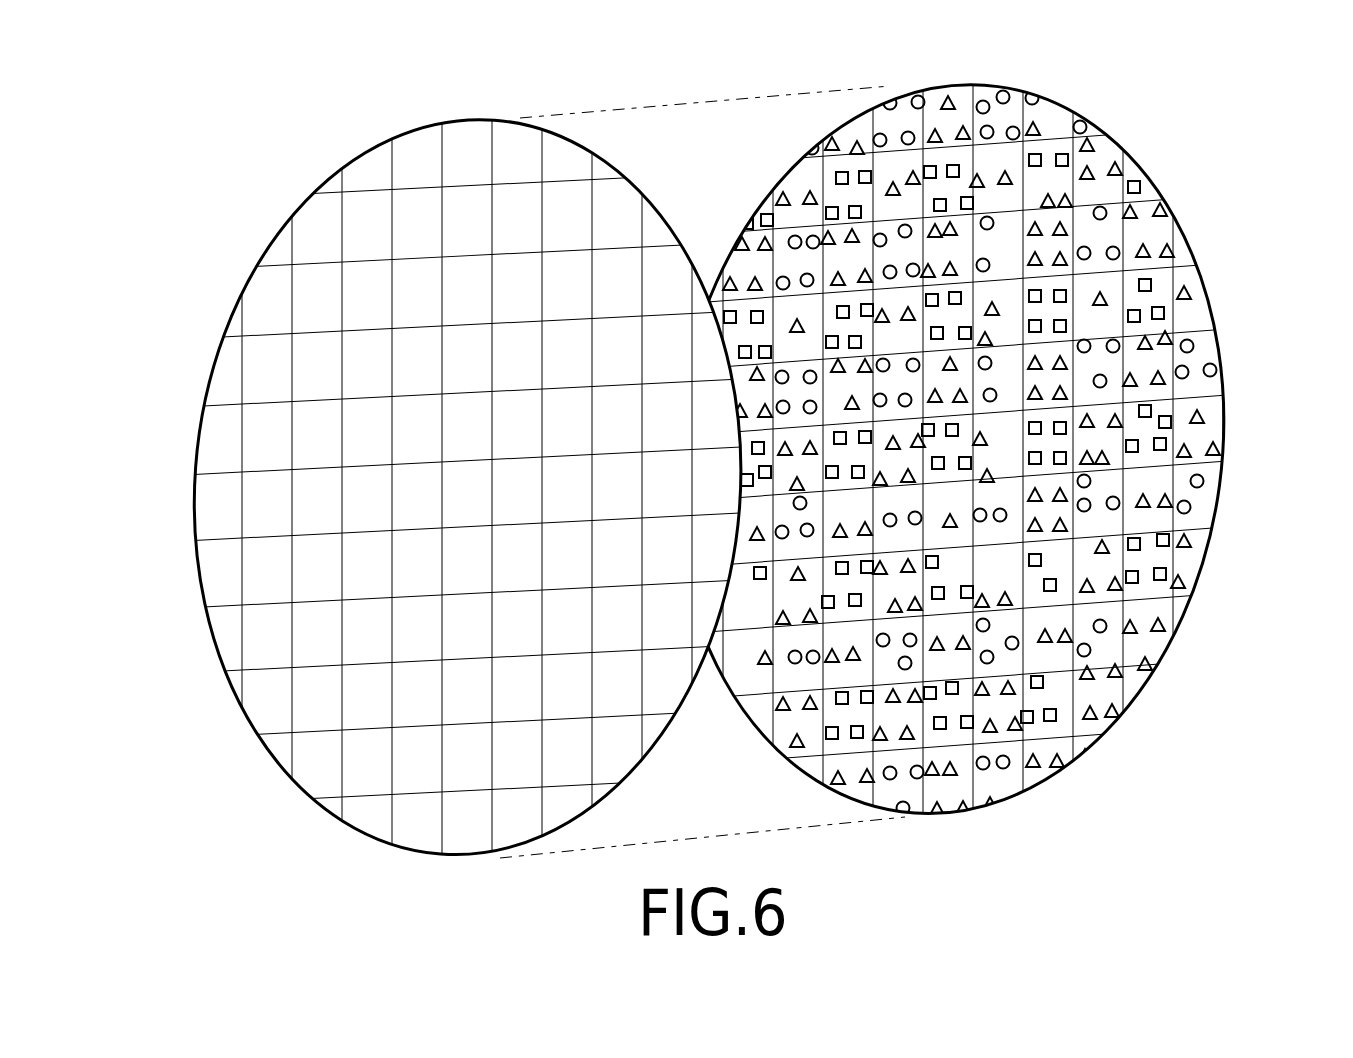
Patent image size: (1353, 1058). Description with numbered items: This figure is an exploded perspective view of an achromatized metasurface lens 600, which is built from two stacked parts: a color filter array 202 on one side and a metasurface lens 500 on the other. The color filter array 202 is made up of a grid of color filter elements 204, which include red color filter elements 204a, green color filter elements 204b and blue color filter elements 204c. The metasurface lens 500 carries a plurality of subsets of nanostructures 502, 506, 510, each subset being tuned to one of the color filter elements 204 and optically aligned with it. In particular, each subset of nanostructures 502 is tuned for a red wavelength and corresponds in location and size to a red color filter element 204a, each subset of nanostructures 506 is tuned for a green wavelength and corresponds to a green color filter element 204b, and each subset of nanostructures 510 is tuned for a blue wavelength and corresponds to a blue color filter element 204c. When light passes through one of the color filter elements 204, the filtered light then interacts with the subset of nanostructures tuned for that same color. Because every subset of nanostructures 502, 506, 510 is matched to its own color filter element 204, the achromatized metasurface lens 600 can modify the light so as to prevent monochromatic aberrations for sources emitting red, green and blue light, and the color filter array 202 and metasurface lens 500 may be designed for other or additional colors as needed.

The achromatized metasurface lens 600 is at (148, 108).
The color filter array 202 is at (275, 247).
The color filter elements 204 is at (262, 462).
The red color filter element 204a is at (352, 215).
The green color filter element 204b is at (426, 196).
The blue color filter element 204c is at (498, 157).
The metasurface lens 500 is at (952, 80).
The subset of nanostructures tuned for red 502 is at (1043, 152).
The subset of nanostructures tuned for green 506 is at (1150, 231).
The subset of nanostructures tuned for blue 510 is at (1200, 355).